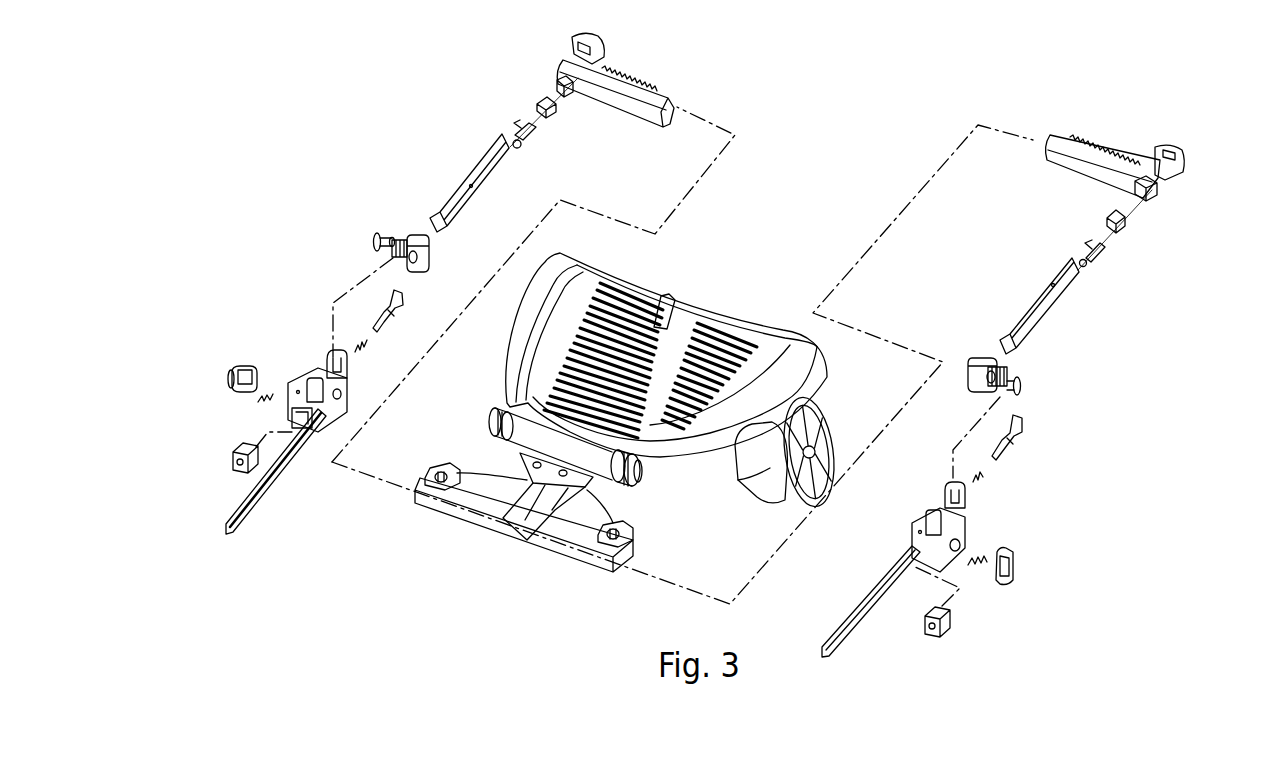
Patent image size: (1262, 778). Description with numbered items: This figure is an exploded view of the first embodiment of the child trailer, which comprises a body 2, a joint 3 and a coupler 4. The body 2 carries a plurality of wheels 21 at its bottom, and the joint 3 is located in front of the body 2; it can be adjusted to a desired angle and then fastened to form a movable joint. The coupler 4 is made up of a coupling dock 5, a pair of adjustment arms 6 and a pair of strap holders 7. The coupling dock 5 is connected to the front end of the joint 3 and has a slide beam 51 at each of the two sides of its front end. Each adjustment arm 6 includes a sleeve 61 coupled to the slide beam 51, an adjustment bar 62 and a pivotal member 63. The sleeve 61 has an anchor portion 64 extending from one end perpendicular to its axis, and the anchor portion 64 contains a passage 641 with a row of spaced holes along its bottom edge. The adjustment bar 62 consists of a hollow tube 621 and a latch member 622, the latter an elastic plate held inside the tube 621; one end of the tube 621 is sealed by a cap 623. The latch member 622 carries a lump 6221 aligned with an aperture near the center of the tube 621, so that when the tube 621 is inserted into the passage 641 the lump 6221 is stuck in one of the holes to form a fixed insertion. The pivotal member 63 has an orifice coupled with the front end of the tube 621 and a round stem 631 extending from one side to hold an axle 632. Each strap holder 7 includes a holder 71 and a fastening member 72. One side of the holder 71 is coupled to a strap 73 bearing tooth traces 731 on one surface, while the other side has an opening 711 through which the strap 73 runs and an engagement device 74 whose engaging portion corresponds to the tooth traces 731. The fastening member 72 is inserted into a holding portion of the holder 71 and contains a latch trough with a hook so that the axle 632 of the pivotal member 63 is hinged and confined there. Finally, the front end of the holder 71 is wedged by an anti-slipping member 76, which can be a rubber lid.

The body 2 is at (655, 300).
The wheels 21 is at (810, 420).
The joint 3 is at (533, 437).
The coupler 4 is at (284, 118).
The coupling dock 5 is at (500, 487).
The slide beam 51 is at (470, 515).
The adjustment arm 6 is at (388, 93).
The sleeve 61 is at (627, 83).
The adjustment bar 62 is at (427, 142).
The tube 621 is at (467, 187).
The latch member 622 is at (523, 128).
The lump 6221 is at (519, 148).
The cap 623 is at (540, 100).
The pivotal member 63 is at (430, 255).
The round stem 631 is at (400, 240).
The axle 632 is at (374, 241).
The anchor portion 64 is at (578, 46).
The passage 641 is at (565, 82).
The strap holder 7 is at (288, 310).
The holder 71 is at (307, 383).
The opening 711 is at (295, 422).
The fastening member 72 is at (399, 307).
The strap 73 is at (240, 500).
The tooth traces 731 is at (265, 493).
The engagement device 74 is at (243, 375).
The anti-slipping member 76 is at (240, 452).